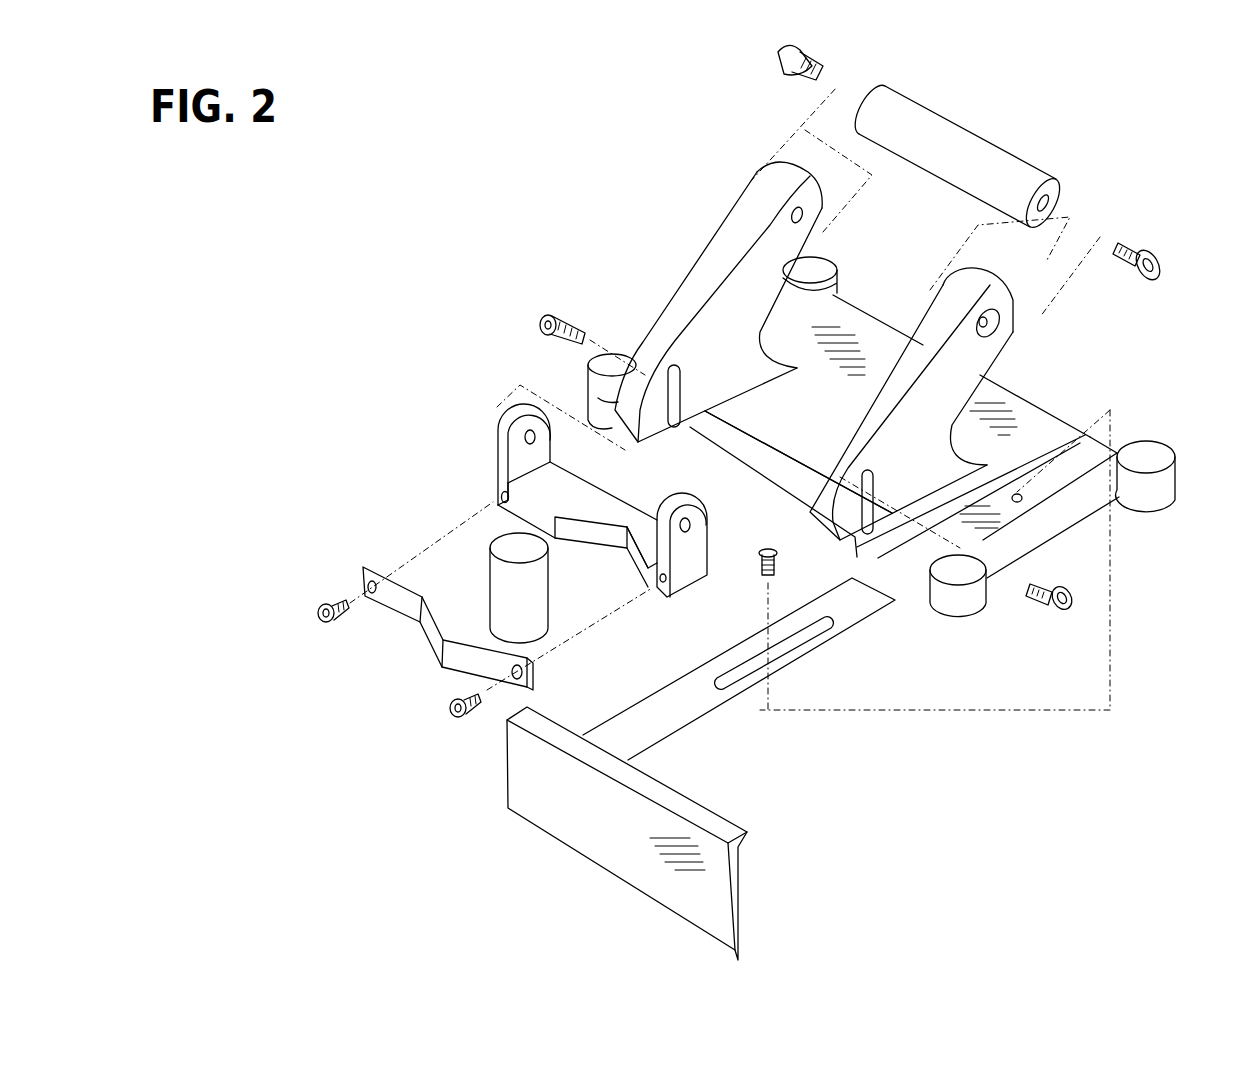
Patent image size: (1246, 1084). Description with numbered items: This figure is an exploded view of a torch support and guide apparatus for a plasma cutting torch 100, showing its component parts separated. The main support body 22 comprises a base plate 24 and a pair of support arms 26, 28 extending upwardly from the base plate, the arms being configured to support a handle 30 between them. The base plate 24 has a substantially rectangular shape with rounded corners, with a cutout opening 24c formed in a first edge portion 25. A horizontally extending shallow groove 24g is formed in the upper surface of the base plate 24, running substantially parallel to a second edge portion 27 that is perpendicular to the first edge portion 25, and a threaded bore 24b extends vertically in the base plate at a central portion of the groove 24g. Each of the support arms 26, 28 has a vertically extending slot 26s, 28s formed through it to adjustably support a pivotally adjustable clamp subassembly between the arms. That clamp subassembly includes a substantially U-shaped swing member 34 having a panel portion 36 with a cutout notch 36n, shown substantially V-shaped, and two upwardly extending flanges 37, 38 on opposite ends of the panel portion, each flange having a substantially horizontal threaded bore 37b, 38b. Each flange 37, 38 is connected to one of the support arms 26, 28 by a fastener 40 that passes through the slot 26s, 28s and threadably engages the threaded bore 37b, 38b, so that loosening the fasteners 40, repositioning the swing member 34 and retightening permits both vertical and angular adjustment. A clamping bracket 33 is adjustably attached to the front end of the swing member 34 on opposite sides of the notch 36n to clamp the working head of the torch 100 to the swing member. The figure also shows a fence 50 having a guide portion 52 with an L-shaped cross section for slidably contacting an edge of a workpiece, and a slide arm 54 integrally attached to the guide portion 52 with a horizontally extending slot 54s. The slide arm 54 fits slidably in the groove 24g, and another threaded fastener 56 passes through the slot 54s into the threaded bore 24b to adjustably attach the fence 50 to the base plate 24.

The main support body 22 is at (638, 328).
The base plate 24 is at (826, 420).
The threaded bore 24b is at (1017, 492).
The cutout opening 24c is at (742, 440).
The shallow groove 24g is at (1093, 440).
The first edge portion 25 is at (932, 595).
The support arm 26 is at (773, 343).
The vertically extending slot 26s is at (686, 372).
The second edge portion 27 is at (1063, 530).
The support arm 28 is at (938, 482).
The vertically extending slot 28s is at (876, 482).
The handle 30 is at (978, 127).
The clamping bracket 33 is at (432, 643).
The swing member 34 is at (510, 513).
The panel portion 36 is at (600, 505).
The cutout notch 36n is at (597, 536).
The flange 37 is at (497, 455).
The threaded bore 37b is at (527, 432).
The flange 38 is at (695, 572).
The threaded bore 38b is at (692, 527).
The fastener 40 is at (540, 318).
The fence 50 is at (702, 769).
The guide portion 52 is at (632, 838).
The slide arm 54 is at (739, 674).
The horizontally extending slot 54s is at (744, 663).
The threaded fastener 56 is at (779, 567).
The plasma cutting torch 100 is at (540, 605).